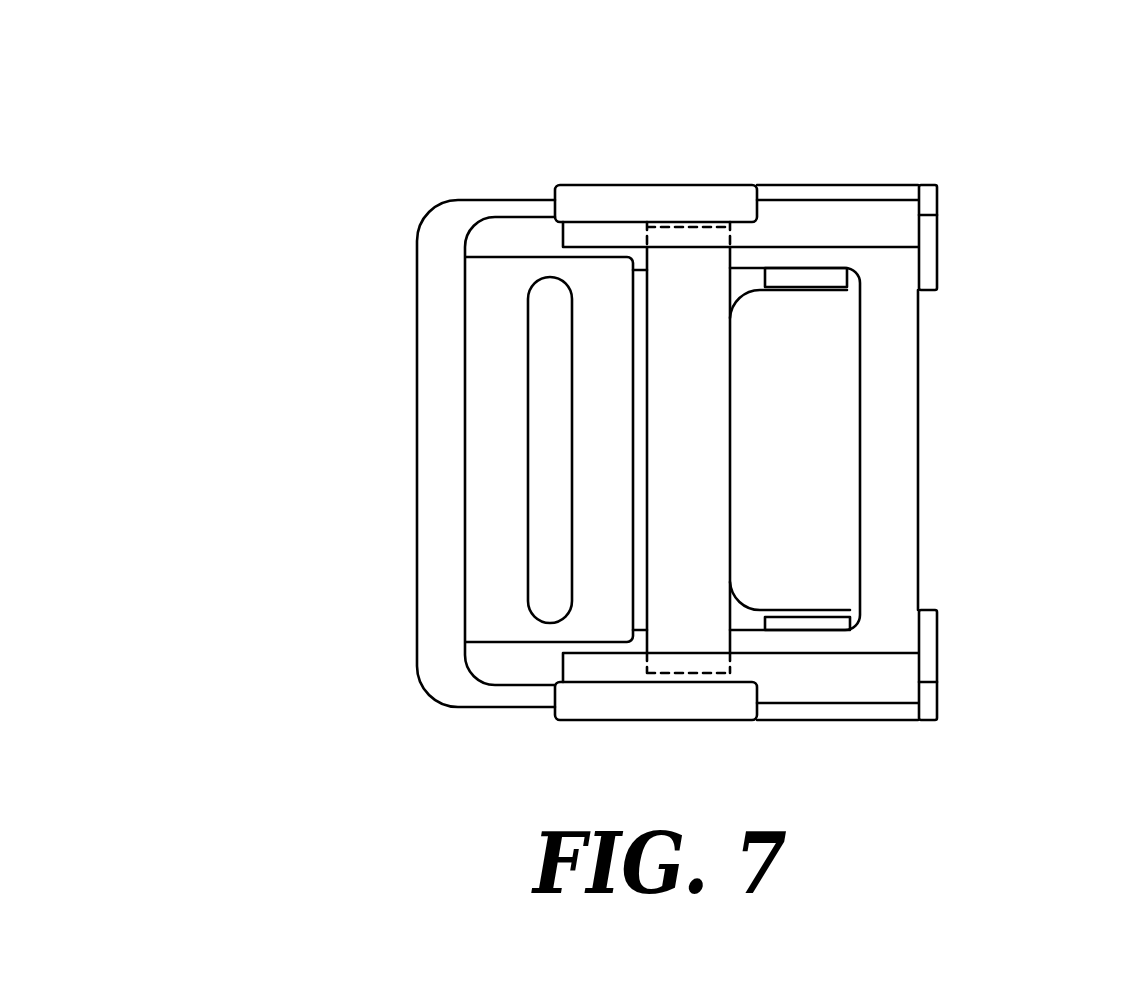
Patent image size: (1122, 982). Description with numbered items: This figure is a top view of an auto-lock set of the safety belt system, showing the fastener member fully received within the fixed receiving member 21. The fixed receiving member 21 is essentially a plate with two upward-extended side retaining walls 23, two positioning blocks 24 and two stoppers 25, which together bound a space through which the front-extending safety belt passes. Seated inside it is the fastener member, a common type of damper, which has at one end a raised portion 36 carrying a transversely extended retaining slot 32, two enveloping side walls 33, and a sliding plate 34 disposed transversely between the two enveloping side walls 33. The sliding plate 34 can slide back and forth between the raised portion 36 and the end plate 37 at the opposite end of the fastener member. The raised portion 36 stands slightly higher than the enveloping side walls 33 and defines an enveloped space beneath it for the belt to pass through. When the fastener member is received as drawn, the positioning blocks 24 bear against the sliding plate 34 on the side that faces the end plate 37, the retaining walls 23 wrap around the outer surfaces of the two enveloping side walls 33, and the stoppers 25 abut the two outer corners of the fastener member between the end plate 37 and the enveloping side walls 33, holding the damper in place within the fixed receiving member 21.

The fixed receiving member 21 is at (385, 568).
The side retaining wall 23 is at (600, 200).
The positioning block 24 is at (840, 278).
The stopper 25 is at (940, 193).
The retaining slot 32 is at (547, 287).
The enveloping side wall 33 is at (878, 214).
The sliding plate 34 is at (718, 270).
The raised portion 36 is at (478, 318).
The end plate 37 is at (900, 422).